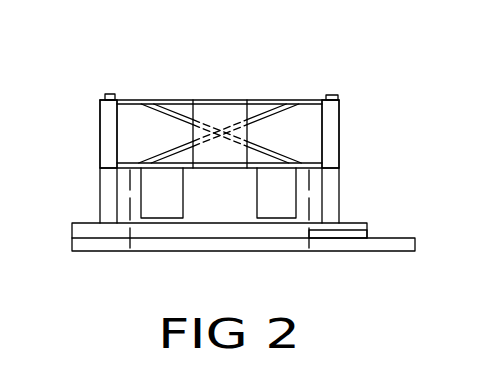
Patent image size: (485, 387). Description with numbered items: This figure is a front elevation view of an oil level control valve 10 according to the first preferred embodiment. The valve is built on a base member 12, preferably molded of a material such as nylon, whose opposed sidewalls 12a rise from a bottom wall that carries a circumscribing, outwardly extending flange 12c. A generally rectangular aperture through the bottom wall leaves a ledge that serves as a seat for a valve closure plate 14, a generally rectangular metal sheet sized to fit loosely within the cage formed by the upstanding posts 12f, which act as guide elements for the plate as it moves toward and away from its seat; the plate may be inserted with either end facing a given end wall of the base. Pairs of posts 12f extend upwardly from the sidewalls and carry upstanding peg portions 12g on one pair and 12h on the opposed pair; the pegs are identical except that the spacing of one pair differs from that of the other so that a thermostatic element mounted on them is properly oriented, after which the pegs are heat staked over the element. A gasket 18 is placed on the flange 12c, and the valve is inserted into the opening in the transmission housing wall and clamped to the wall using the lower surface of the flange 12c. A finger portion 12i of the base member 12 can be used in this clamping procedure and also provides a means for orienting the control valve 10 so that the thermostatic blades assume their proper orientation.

The oil level control valve 10 is at (190, 76).
The base member 12 is at (100, 163).
The sidewalls 12a is at (220, 210).
The flange 12c is at (182, 243).
The posts 12f is at (110, 133).
The peg portion 12g is at (107, 95).
The peg portion 12h is at (335, 98).
The finger portion 12i is at (390, 243).
The valve closure plate 14 is at (316, 160).
The gasket 18 is at (357, 232).